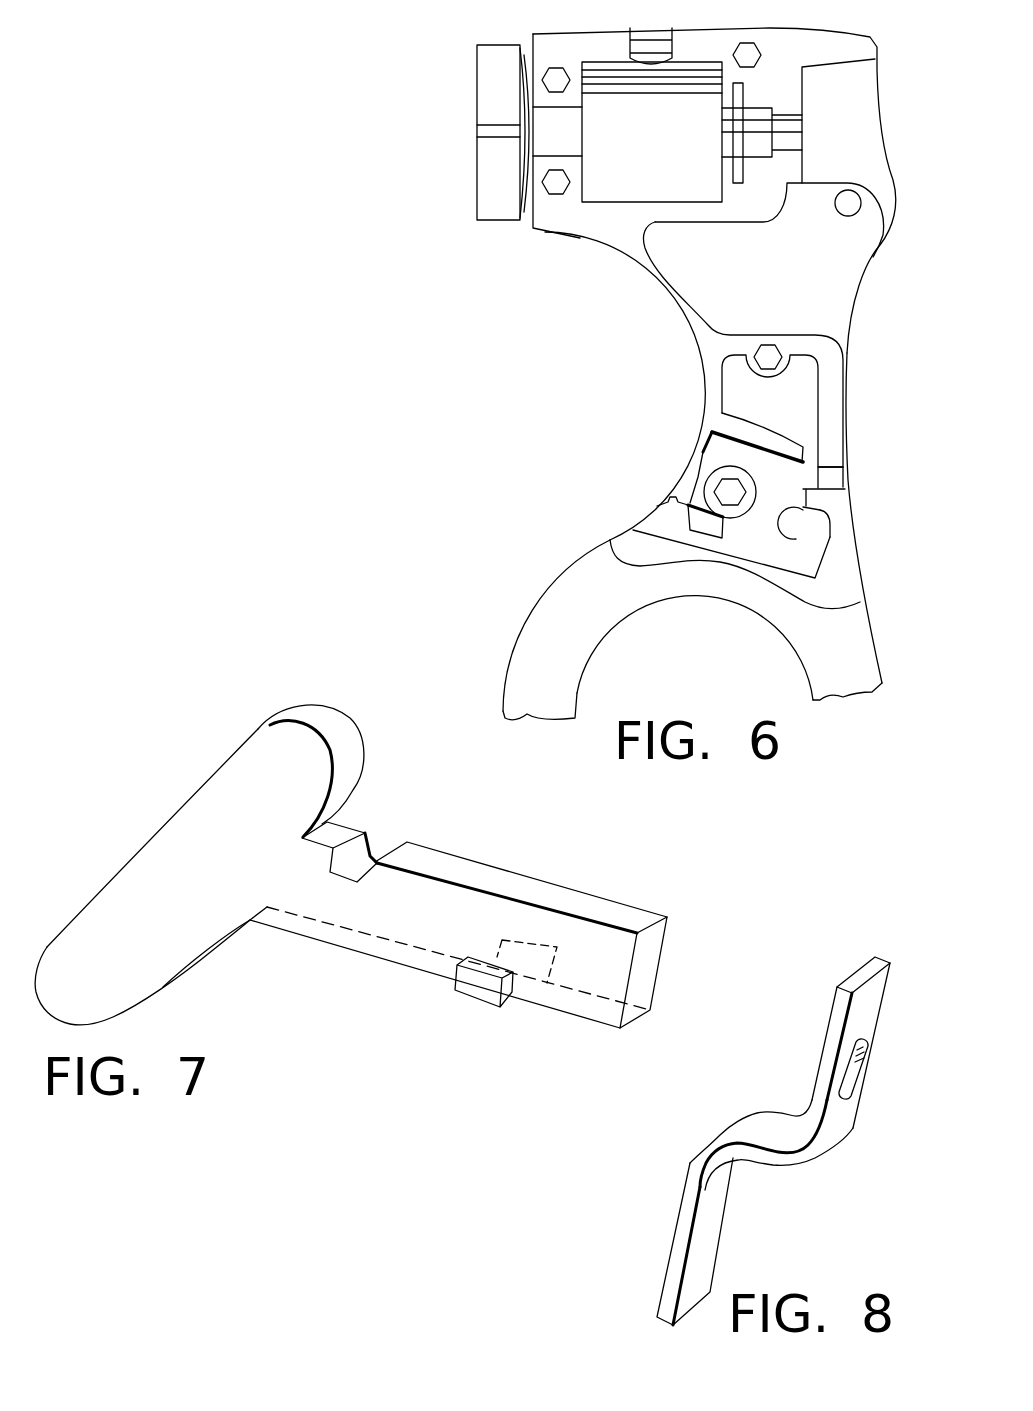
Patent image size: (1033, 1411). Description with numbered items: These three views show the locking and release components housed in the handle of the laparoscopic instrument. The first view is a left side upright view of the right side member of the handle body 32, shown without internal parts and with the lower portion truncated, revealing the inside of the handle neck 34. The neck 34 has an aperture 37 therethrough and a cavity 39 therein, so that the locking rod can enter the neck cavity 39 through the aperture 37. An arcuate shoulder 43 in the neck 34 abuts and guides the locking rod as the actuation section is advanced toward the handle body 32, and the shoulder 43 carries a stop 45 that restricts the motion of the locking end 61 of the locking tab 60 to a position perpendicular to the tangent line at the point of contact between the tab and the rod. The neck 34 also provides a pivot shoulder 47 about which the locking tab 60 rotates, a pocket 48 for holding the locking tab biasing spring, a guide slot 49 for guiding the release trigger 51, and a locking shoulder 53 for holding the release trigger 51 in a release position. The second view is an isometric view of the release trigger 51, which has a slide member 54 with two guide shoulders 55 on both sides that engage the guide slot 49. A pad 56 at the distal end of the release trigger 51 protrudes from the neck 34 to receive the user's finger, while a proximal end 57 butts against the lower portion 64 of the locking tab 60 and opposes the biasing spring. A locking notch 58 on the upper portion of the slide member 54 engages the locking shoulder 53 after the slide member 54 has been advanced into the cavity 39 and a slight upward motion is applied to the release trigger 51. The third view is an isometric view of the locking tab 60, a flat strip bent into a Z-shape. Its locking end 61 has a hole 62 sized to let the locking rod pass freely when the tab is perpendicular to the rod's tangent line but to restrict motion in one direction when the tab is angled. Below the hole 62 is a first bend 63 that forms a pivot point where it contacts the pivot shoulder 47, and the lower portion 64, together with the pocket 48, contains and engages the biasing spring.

In FIG. 6, the handle body 32 is at (782, 43).
In FIG. 6, the handle neck 34 is at (653, 273).
In FIG. 6, the arcuate shoulder 43 is at (750, 437).
In FIG. 6, the stop 45 is at (807, 452).
In FIG. 6, the aperture 37 is at (822, 481).
In FIG. 6, the cavity 39 is at (777, 495).
In FIG. 6, the locking shoulder 53 is at (660, 504).
In FIG. 6, the pivot shoulder 47 is at (787, 538).
In FIG. 6, the guide slot 49 is at (703, 540).
In FIG. 6, the pocket 48 is at (757, 547).
In FIG. 7, the release trigger 51 is at (206, 745).
In FIG. 7, the pad 56 is at (147, 867).
In FIG. 7, the locking notch 58 is at (358, 850).
In FIG. 7, the slide member 54 is at (353, 917).
In FIG. 7, the proximal end 57 is at (653, 947).
In FIG. 7, the guide shoulders 55 is at (480, 990).
In FIG. 8, the locking tab 60 is at (700, 1112).
In FIG. 8, the locking end 61 is at (848, 972).
In FIG. 8, the hole 62 is at (853, 1070).
In FIG. 8, the first bend 63 is at (780, 1160).
In FIG. 8, the lower portion 64 is at (675, 1262).